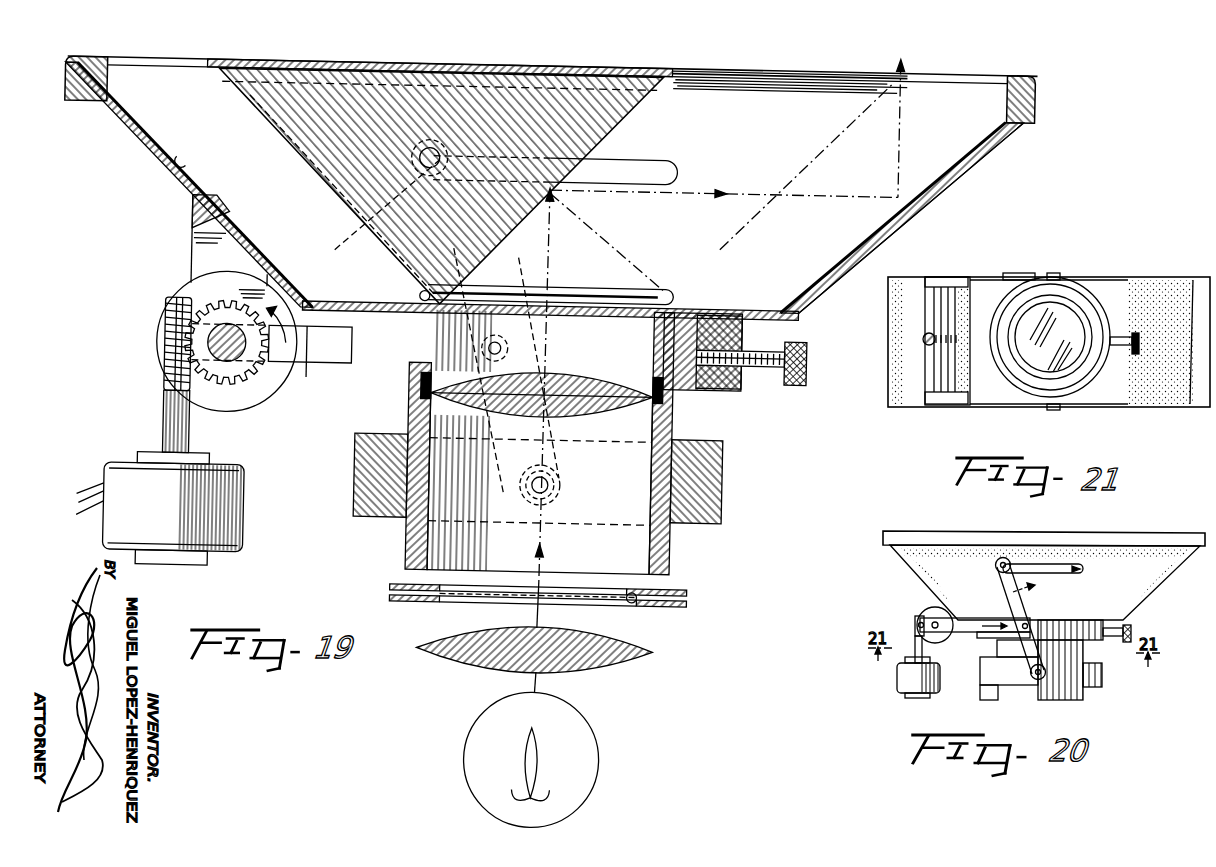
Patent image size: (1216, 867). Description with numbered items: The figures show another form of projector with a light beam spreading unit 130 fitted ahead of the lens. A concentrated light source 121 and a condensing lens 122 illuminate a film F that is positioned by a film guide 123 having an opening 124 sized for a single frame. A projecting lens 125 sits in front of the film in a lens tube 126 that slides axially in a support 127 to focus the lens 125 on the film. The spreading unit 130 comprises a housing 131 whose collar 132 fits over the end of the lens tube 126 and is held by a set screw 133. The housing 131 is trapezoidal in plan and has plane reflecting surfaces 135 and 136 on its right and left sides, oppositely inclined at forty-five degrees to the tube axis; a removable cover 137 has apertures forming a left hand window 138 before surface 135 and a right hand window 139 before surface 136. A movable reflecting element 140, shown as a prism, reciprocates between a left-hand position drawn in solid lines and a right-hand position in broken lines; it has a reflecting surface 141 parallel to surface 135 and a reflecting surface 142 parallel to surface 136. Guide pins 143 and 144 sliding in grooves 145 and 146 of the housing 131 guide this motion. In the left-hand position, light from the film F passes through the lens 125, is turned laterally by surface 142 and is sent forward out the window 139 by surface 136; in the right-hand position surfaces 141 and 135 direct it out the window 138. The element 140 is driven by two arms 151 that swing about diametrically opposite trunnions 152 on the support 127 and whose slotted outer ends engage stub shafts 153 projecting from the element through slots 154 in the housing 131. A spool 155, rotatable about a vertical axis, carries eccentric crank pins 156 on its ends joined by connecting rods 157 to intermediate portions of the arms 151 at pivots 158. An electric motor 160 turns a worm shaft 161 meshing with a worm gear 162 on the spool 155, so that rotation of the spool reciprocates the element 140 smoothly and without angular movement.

In FIG. 19, the concentrated light source 121 is at (471, 760).
In FIG. 19, the condensing lens 122 is at (575, 672).
In FIG. 19, the film guide 123 is at (688, 600).
In FIG. 19, the opening 124 is at (638, 604).
In FIG. 19, the projecting lens 125 is at (665, 424).
In FIG. 21, the projecting lens 125 is at (1063, 370).
In FIG. 19, the lens tube 126 is at (410, 546).
In FIG. 21, the lens tube 126 is at (1090, 320).
In FIG. 20, the lens tube 126 is at (1080, 700).
In FIG. 19, the support 127 is at (725, 520).
In FIG. 21, the support 127 is at (1082, 300).
In FIG. 20, the support 127 is at (1100, 687).
In FIG. 19, the light beam spreading unit 130 is at (838, 276).
In FIG. 19, the housing 131 is at (147, 140).
In FIG. 20, the housing 131 is at (1170, 570).
In FIG. 19, the collar 132 is at (745, 338).
In FIG. 21, the collar 132 is at (1090, 385).
In FIG. 20, the collar 132 is at (1103, 640).
In FIG. 19, the set screw 133 is at (793, 382).
In FIG. 21, the set screw 133 is at (1137, 356).
In FIG. 20, the set screw 133 is at (1131, 630).
In FIG. 19, the plane reflecting surface 135 is at (180, 166).
In FIG. 19, the plane reflecting surface 136 is at (860, 233).
In FIG. 19, the removable cover 137 is at (58, 102).
In FIG. 21, the removable cover 137 is at (1200, 280).
In FIG. 20, the removable cover 137 is at (1160, 541).
In FIG. 19, the left hand window 138 is at (120, 63).
In FIG. 19, the right hand window 139 is at (1002, 86).
In FIG. 19, the movable reflecting element 140 is at (366, 74).
In FIG. 19, the reflecting surface 141 is at (332, 201).
In FIG. 19, the reflecting surface 142 is at (632, 114).
In FIG. 19, the guide pin 143 is at (216, 90).
In FIG. 19, the guide pin 144 is at (416, 298).
In FIG. 19, the slot or groove 145 is at (268, 101).
In FIG. 19, the slot or groove 146 is at (605, 291).
In FIG. 19, the arms 151 is at (519, 273).
In FIG. 21, the arms 151 is at (1025, 275).
In FIG. 20, the arms 151 is at (1022, 612).
In FIG. 19, the trunnions 152 is at (556, 481).
In FIG. 21, the trunnions 152 is at (1055, 279).
In FIG. 20, the trunnions 152 is at (1032, 676).
In FIG. 19, the stub shafts 153 is at (362, 232).
In FIG. 20, the stub shafts 153 is at (1000, 557).
In FIG. 19, the slots 154 is at (634, 184).
In FIG. 20, the slots 154 is at (1082, 566).
In FIG. 21, the spool 155 is at (945, 277).
In FIG. 20, the spool 155 is at (928, 608).
In FIG. 19, the eccentric crank pins 156 is at (165, 349).
In FIG. 21, the eccentric crank pins 156 is at (940, 277).
In FIG. 20, the eccentric crank pins 156 is at (916, 622).
In FIG. 19, the connecting rods 157 is at (305, 358).
In FIG. 21, the connecting rods 157 is at (985, 278).
In FIG. 20, the connecting rods 157 is at (972, 638).
In FIG. 19, the pivotal connection 158 is at (510, 348).
In FIG. 21, the pivotal connection 158 is at (1035, 275).
In FIG. 20, the pivotal connection 158 is at (1105, 615).
In FIG. 19, the electric motor 160 is at (248, 508).
In FIG. 20, the electric motor 160 is at (900, 682).
In FIG. 19, the worm shaft 161 is at (168, 358).
In FIG. 21, the worm shaft 161 is at (922, 340).
In FIG. 20, the worm shaft 161 is at (916, 650).
In FIG. 19, the worm gear 162 is at (255, 378).
In FIG. 21, the worm gear 162 is at (933, 346).
In FIG. 19, the film F is at (470, 600).